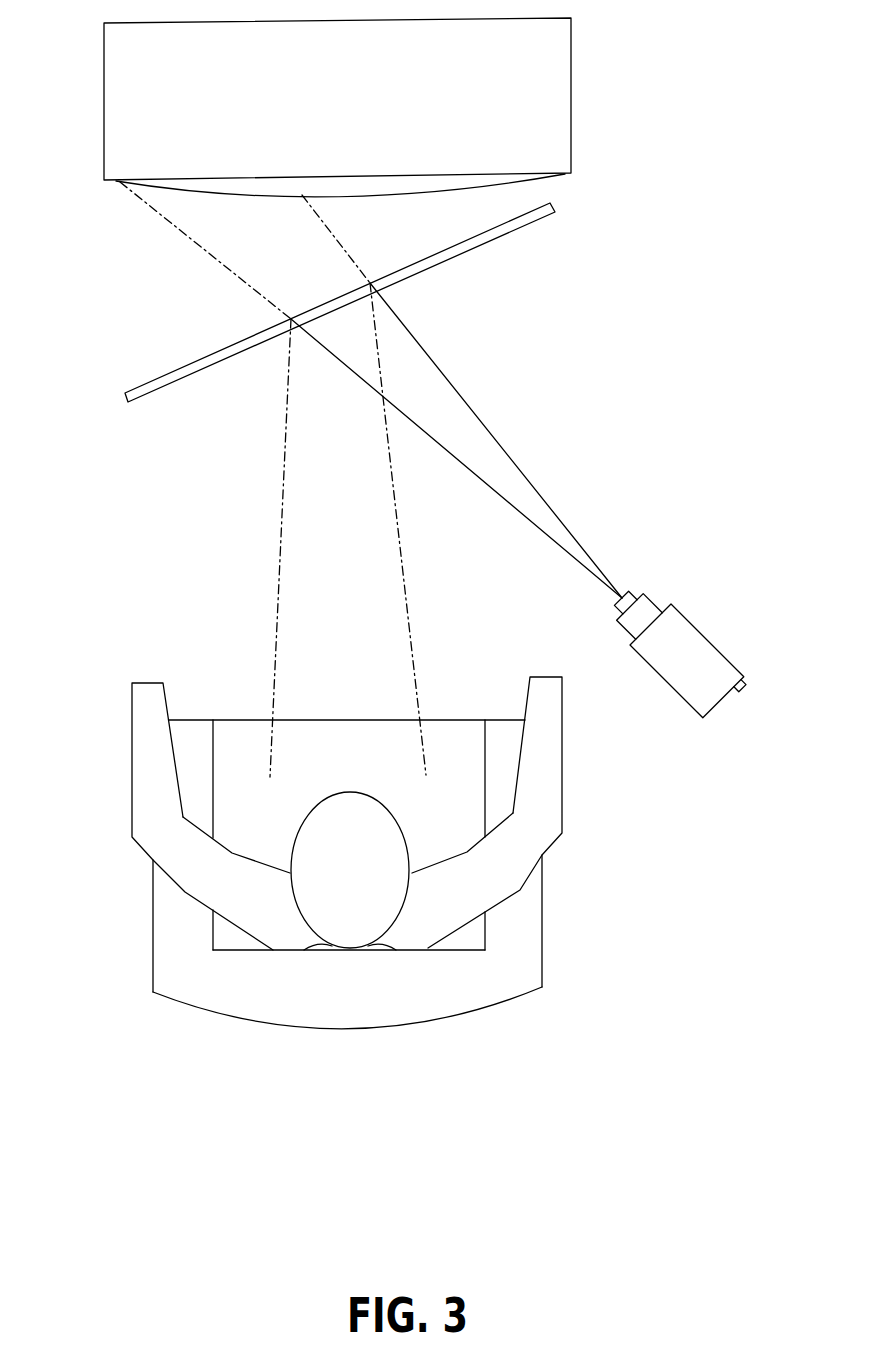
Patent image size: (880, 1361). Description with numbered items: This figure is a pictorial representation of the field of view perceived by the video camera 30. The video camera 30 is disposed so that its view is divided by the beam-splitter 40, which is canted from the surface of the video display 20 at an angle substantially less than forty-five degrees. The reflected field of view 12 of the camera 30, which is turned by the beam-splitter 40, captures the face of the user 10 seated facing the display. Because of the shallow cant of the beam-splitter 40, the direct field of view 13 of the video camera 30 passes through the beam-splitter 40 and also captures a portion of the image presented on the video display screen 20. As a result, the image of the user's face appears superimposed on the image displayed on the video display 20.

The user 10 is at (309, 817).
The reflected field of view 12 is at (332, 623).
The direct field of view 13 is at (262, 228).
The video display 20 is at (104, 40).
The video camera 30 is at (715, 647).
The beam-splitter 40 is at (556, 209).